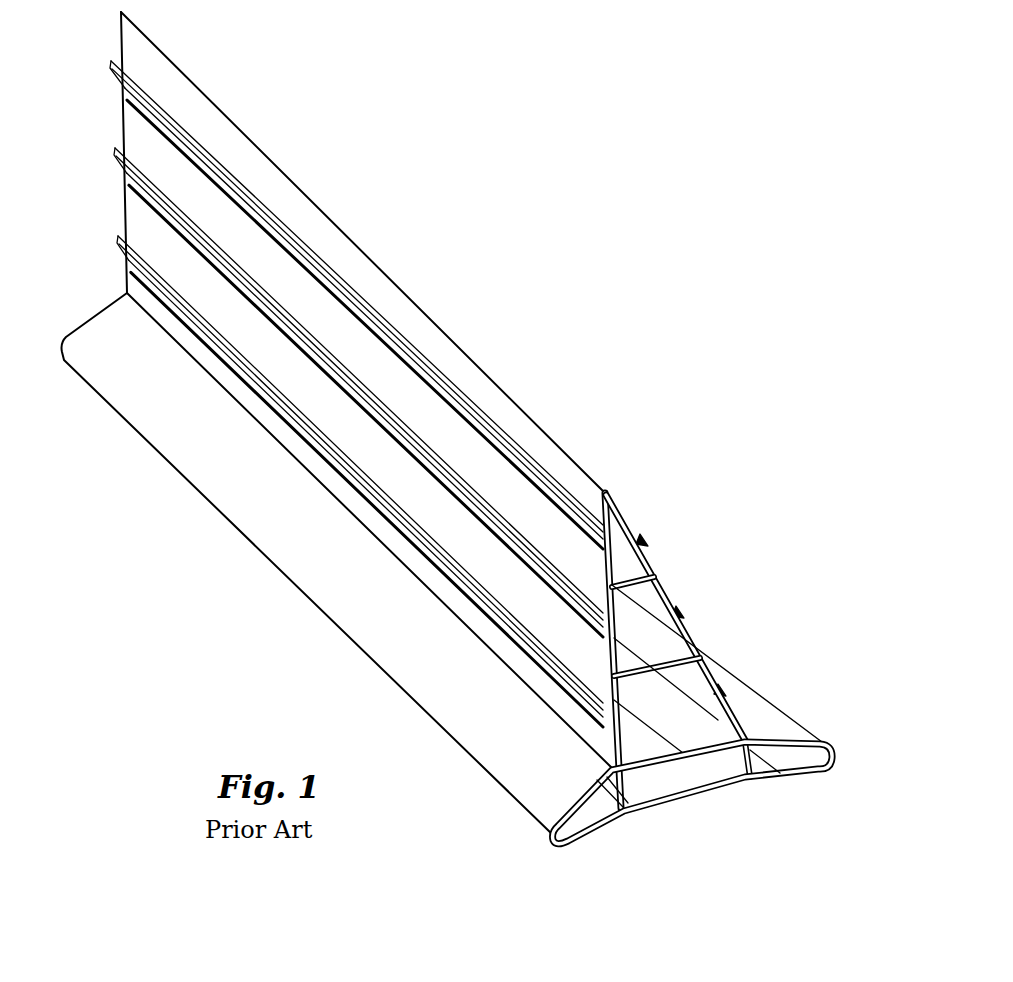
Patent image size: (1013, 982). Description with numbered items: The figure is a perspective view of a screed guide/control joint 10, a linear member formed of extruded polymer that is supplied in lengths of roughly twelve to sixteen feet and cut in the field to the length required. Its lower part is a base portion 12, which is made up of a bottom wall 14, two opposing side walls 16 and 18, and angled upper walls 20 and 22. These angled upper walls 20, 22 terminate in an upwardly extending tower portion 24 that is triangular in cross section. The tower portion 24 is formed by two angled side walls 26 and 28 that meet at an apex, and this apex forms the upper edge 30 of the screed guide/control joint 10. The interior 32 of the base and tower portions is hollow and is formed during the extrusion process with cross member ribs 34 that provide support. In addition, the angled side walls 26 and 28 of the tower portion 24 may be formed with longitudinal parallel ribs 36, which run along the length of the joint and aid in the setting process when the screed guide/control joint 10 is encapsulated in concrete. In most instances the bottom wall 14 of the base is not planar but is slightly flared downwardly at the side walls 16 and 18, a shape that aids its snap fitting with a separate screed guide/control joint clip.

The screed guide/control joint 10 is at (498, 236).
The base portion 12 is at (824, 692).
The bottom wall 14 is at (729, 803).
The side wall 16 is at (530, 812).
The side wall 18 is at (833, 757).
The angled upper wall 20 is at (518, 722).
The angled upper wall 22 is at (740, 680).
The tower portion 24 is at (715, 635).
The angled side wall 26 is at (433, 515).
The angled side wall 28 is at (648, 562).
The upper edge 30 is at (497, 385).
The interior 32 is at (640, 790).
The cross member ribs 34 is at (690, 650).
The longitudinal parallel ribs 36 is at (123, 170).